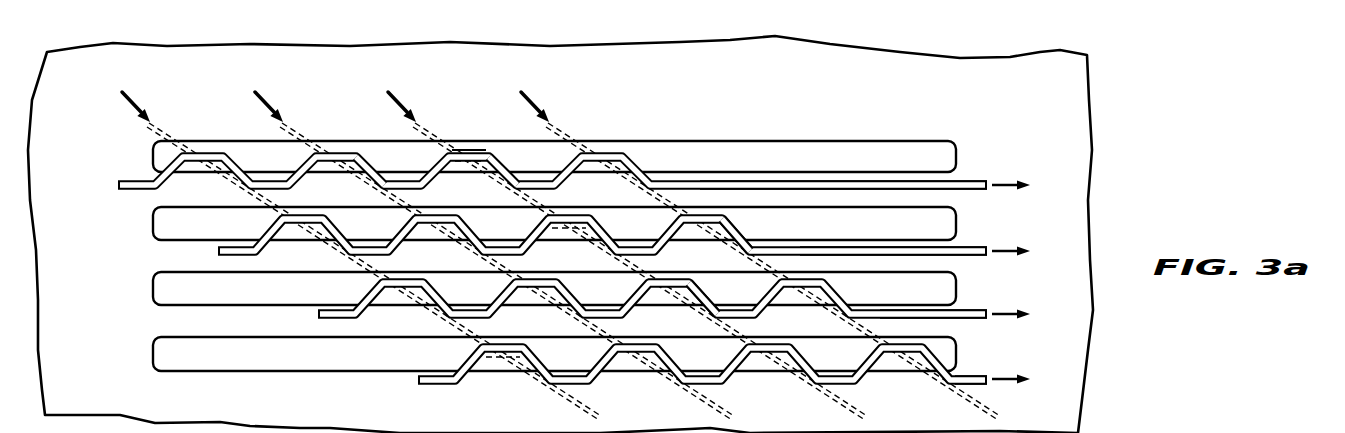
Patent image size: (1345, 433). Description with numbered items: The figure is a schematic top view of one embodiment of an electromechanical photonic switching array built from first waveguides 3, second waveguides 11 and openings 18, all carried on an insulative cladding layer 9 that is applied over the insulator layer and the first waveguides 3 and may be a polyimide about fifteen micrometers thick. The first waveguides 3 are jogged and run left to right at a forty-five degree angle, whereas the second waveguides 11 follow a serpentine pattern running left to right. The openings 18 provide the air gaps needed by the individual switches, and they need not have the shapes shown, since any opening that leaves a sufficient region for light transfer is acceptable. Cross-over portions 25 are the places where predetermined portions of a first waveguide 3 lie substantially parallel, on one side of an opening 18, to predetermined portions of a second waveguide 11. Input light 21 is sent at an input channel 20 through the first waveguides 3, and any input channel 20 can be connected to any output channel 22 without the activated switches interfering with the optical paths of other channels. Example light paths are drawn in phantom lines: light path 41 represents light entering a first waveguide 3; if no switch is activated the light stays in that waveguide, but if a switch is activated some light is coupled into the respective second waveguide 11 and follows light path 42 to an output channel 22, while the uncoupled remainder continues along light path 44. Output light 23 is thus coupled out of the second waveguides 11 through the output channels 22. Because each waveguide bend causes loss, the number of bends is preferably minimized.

The insulative cladding layer 9 is at (1055, 123).
The opening 18 is at (155, 163).
The second waveguide 11 is at (168, 178).
The input light 21 is at (137, 91).
The input channel 20 is at (168, 129).
The first waveguide 3 is at (363, 268).
The cross-over portion 25 is at (465, 146).
The light path 41 is at (367, 177).
The light path 42 is at (742, 237).
The light path 44 is at (707, 301).
The output channel 22 is at (972, 180).
The output light 23 is at (998, 184).